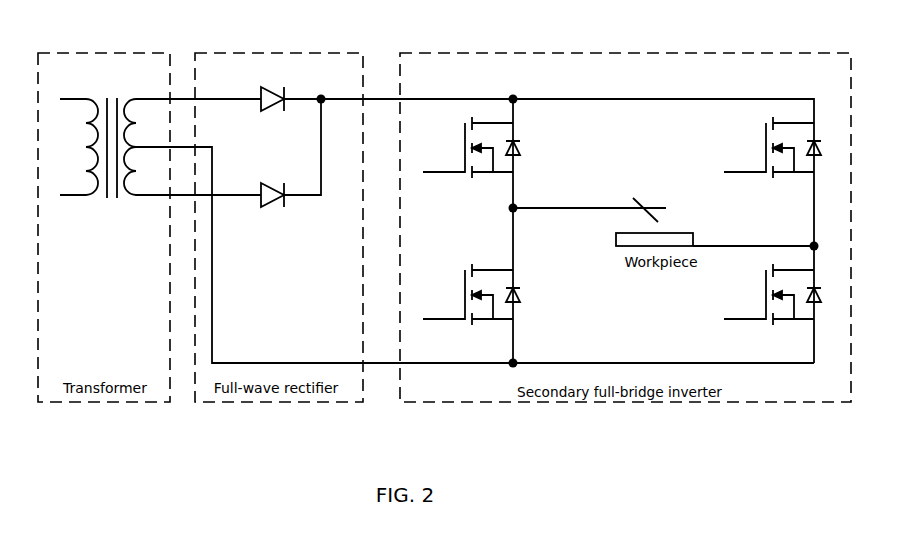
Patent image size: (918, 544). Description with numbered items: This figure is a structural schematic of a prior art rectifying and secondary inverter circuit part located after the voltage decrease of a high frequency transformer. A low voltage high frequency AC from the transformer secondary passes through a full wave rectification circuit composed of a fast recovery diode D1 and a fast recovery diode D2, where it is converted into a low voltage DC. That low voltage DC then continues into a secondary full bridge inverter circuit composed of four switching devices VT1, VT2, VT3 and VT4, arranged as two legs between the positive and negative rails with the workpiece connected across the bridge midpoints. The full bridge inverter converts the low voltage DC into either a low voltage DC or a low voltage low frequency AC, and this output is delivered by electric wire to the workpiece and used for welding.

The fast recovery diode D1 is at (290, 115).
The fast recovery diode D2 is at (290, 169).
The inverter switching transistor VT1 is at (469, 147).
The inverter switching transistor VT2 is at (768, 147).
The inverter switching transistor VT3 is at (469, 294).
The inverter switching transistor VT4 is at (766, 294).